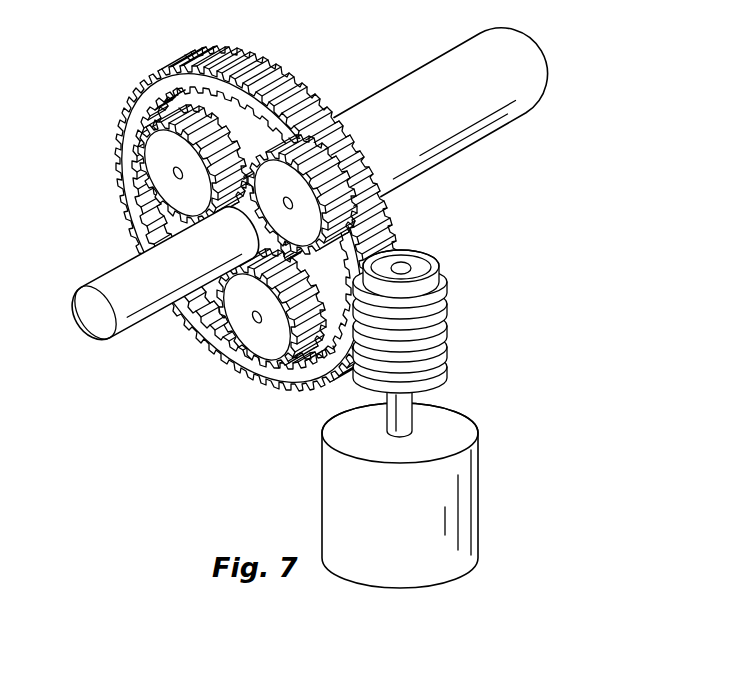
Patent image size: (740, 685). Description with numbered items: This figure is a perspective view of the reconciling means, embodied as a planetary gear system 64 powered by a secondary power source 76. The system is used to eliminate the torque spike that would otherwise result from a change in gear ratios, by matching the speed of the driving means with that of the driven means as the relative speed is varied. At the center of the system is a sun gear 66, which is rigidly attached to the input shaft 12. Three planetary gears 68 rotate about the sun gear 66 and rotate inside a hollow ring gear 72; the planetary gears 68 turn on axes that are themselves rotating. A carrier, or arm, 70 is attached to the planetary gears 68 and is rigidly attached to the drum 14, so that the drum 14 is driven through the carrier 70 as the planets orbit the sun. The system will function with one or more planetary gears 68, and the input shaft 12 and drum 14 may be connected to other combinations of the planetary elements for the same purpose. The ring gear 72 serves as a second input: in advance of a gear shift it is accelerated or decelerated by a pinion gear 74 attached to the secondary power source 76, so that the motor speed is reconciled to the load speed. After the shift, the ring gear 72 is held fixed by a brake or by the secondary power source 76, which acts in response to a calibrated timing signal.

The input shaft 12 is at (131, 322).
The drum 14 is at (453, 78).
The planetary gear system 64 is at (598, 75).
The sun gear 66 is at (290, 80).
The planetary gears 68 is at (155, 157).
The carrier 70 is at (315, 257).
The ring gear 72 is at (180, 86).
The pinion gear 74 is at (448, 337).
The secondary power source 76 is at (445, 552).